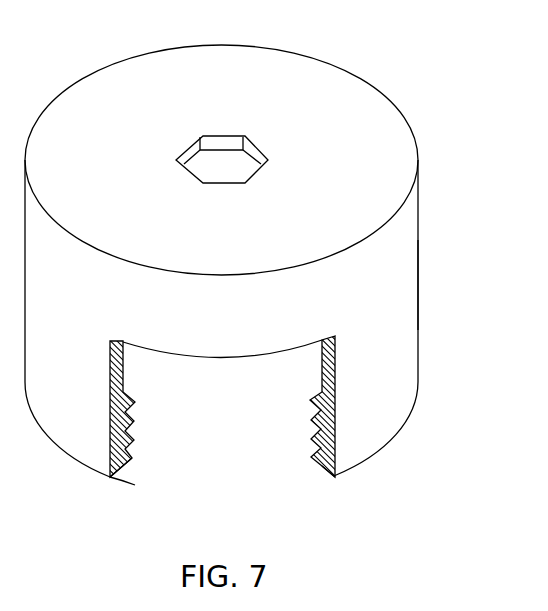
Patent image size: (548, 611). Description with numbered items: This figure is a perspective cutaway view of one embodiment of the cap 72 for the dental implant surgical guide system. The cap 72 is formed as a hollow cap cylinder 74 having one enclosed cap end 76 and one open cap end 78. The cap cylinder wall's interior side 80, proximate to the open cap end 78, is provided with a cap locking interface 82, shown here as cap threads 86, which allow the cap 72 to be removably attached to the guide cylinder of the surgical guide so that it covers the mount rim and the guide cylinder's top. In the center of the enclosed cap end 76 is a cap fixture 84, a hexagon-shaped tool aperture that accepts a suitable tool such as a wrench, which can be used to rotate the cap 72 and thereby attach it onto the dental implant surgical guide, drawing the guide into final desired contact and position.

The cap 72 is at (411, 222).
The cap cylinder 74 is at (421, 308).
The enclosed cap end 76 is at (376, 118).
The open cap end 78 is at (335, 490).
The cap cylinder wall's interior side 80 is at (172, 388).
The cap locking interface 82 is at (150, 418).
The cap fixture 84 is at (185, 147).
The cap threads 86 is at (125, 458).